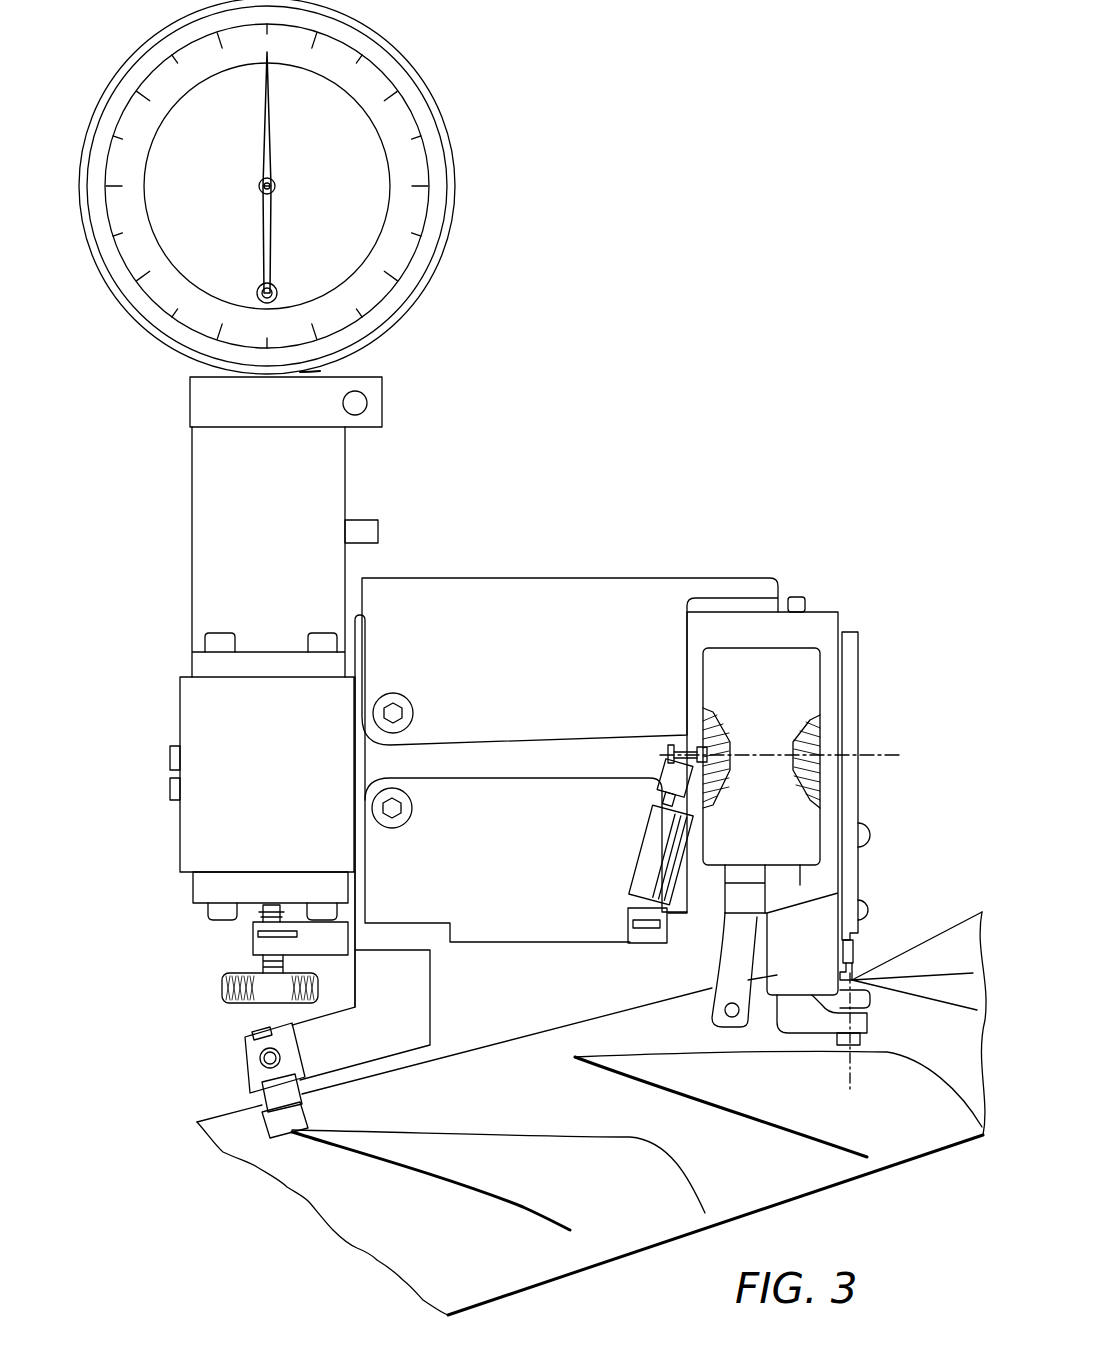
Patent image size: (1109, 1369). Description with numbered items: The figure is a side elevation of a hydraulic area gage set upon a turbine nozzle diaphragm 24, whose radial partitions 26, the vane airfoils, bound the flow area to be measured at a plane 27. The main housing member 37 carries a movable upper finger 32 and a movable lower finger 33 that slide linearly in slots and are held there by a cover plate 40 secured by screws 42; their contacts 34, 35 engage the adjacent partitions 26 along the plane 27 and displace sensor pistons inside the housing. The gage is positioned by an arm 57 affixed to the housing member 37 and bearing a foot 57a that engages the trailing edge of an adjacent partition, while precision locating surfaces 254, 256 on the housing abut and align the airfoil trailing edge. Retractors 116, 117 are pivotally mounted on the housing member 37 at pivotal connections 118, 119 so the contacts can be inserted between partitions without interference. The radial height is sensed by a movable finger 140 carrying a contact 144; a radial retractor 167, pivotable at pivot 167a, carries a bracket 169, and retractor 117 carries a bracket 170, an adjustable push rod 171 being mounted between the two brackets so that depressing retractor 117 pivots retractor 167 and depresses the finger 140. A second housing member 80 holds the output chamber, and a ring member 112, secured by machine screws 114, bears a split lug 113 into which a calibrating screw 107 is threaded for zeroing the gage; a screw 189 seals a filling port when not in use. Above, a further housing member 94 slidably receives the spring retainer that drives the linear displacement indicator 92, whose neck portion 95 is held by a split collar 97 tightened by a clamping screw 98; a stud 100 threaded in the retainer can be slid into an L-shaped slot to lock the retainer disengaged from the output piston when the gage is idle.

The linear displacement indicator 92 is at (455, 178).
The neck portion 95 is at (305, 372).
The split collar 97 is at (192, 402).
The clamping screw 98 is at (365, 405).
The housing member 94 is at (197, 480).
The stud 100 is at (378, 523).
The housing member 80 is at (281, 762).
The screw 189 is at (170, 760).
The ring member 112 is at (322, 897).
The machine screws 114 is at (218, 920).
The split lug 113 is at (253, 948).
The calibrating screw 107 is at (238, 1003).
The retractor 117 is at (583, 933).
The retractor 116 is at (550, 582).
The pivotal connection 118 is at (412, 708).
The housing member 37 is at (546, 765).
The pivotal connection 119 is at (400, 813).
The retractor 167 is at (820, 687).
The pivot 167a is at (885, 757).
The bracket 169 is at (668, 752).
The adjustable push rod 171 is at (652, 832).
The bracket 170 is at (648, 943).
The cover plate 40 is at (850, 747).
The screws 42 is at (860, 850).
The precision locating surface 254 is at (904, 920).
The precision locating surface 256 is at (853, 948).
The contact 34 is at (852, 980).
The movable finger 140 is at (766, 967).
The contact 144 is at (722, 1013).
The lower finger 33 is at (790, 1032).
The upper finger 32 is at (842, 1002).
The contact 35 is at (852, 1047).
The plane 27 is at (848, 1080).
The arm 57 is at (423, 1025).
The foot 57a is at (300, 1118).
The turbine nozzle diaphragm 24 is at (514, 1026).
The radial partition 26 is at (518, 1130).